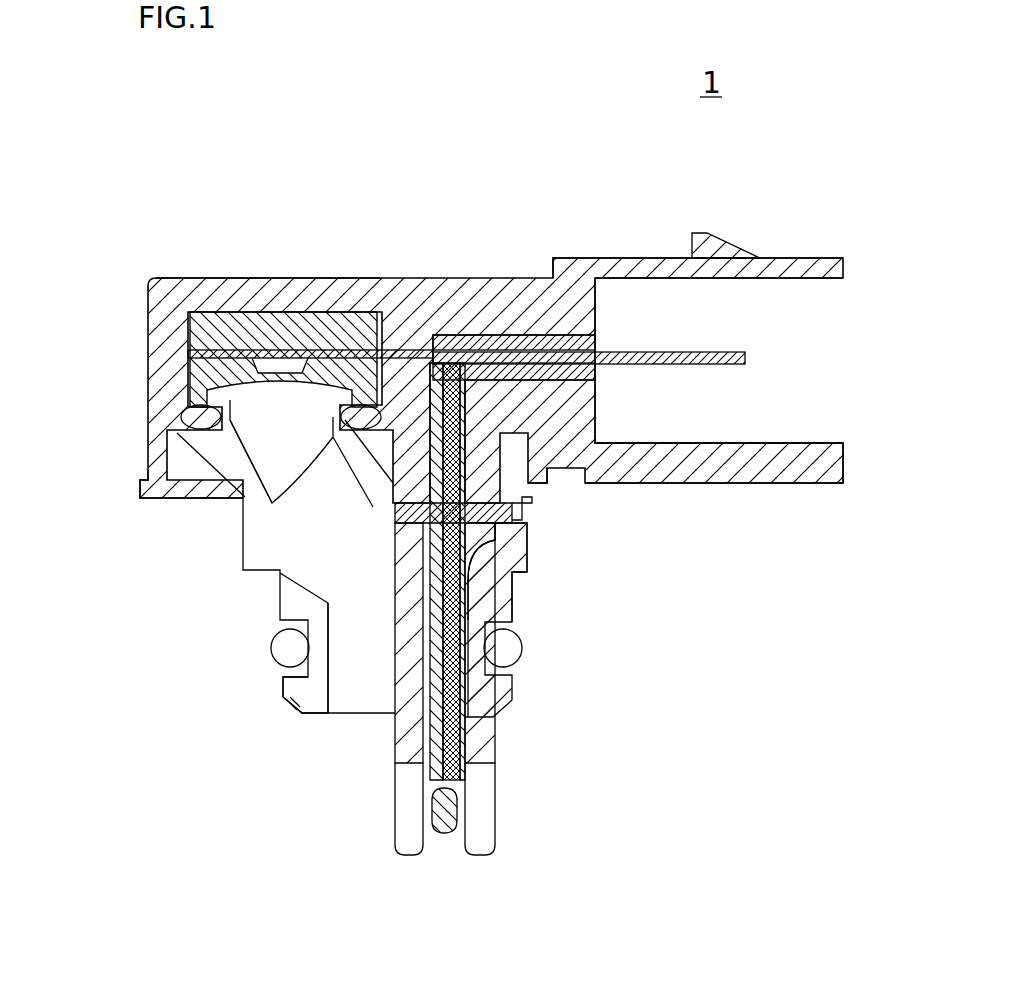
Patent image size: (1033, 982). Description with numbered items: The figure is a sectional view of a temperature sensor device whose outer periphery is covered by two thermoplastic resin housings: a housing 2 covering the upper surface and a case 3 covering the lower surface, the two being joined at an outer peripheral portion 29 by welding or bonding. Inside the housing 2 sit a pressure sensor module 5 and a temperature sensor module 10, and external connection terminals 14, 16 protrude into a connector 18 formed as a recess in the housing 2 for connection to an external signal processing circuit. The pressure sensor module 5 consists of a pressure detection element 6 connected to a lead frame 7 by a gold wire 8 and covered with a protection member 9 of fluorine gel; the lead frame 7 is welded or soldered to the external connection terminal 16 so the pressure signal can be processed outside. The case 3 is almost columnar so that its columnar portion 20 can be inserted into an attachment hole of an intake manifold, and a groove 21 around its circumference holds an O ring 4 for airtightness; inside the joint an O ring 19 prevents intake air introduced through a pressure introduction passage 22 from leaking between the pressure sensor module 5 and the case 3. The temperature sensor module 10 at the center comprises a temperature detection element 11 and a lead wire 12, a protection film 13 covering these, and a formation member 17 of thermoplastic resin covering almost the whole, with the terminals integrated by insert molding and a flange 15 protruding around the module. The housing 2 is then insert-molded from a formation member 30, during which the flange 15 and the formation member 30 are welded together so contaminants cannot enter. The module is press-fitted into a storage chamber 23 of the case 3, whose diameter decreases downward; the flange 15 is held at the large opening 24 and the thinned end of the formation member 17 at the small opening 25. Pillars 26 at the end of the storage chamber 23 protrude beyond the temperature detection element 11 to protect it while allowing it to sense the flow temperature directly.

The housing 2 is at (183, 277).
The case 3 is at (280, 598).
The O ring 4 is at (270, 648).
The pressure sensor module 5 is at (212, 277).
The pressure detection element 6 is at (317, 352).
The lead frame 7 is at (440, 335).
The gold wire 8 is at (277, 350).
The protection member 9 is at (388, 312).
The temperature sensor module 10 is at (497, 337).
The temperature detection element 11 is at (452, 833).
The lead wire 12 is at (393, 483).
The protection film 13 is at (470, 567).
The external connection terminal 14 is at (430, 417).
The flange 15 is at (543, 507).
The external connection terminal 16 is at (690, 370).
The formation member 17 is at (467, 720).
The connector 18 is at (762, 300).
The O ring 19 is at (183, 410).
The columnar portion 20 is at (290, 713).
The groove 21 is at (280, 683).
The pressure introduction passage 22 is at (345, 705).
The storage chamber 23 is at (482, 640).
The opening 24 is at (483, 543).
The opening 25 is at (422, 750).
The pillars 26 is at (487, 792).
The outer peripheral portion 29 is at (140, 483).
The formation member 30 is at (753, 470).